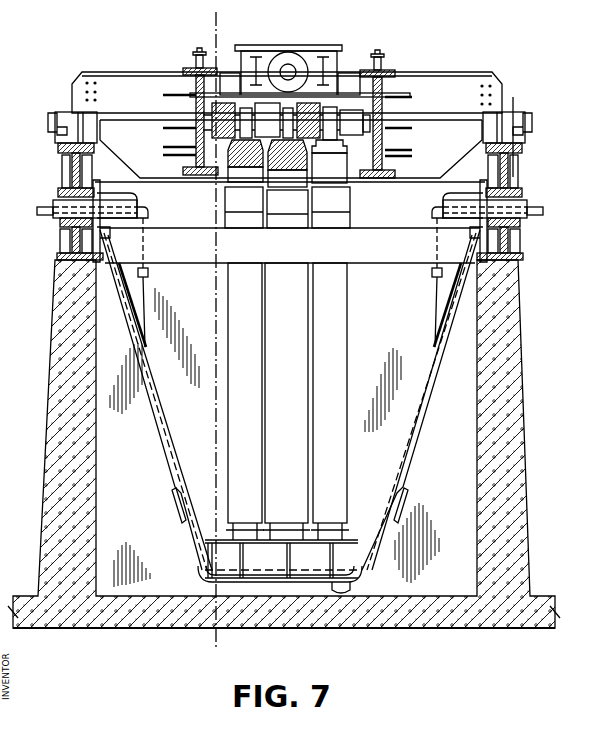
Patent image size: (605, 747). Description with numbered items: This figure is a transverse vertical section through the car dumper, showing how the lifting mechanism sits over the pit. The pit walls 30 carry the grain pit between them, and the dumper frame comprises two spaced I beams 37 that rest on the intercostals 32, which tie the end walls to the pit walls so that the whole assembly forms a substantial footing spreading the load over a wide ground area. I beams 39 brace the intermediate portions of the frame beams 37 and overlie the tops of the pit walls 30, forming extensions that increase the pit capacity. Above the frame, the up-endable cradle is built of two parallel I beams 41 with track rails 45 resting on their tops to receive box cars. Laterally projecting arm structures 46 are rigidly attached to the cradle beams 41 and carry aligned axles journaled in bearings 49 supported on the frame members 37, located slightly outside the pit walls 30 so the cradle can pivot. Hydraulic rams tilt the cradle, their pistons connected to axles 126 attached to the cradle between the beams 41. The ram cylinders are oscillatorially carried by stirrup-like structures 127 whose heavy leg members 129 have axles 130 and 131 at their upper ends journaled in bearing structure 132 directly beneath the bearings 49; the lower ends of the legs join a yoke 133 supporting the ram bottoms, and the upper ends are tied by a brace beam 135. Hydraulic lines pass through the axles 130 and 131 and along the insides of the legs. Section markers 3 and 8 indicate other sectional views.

The section line 3- 3 is at (216, 12).
The section line 8- 8 is at (511, 97).
The pit walls 30 is at (158, 544).
The intercostals 32 is at (55, 436).
The I beams 37 is at (66, 176).
The I beams 39 is at (156, 213).
The I beams 41 is at (188, 158).
The track rails 45 is at (200, 50).
The arm structures 46 is at (154, 131).
The bearings 49 is at (78, 118).
The axles 126 is at (222, 123).
The stirrup-like structures 127 is at (401, 479).
The leg member 129 is at (165, 450).
The axle 130 is at (518, 222).
The axle 131 is at (60, 215).
The bearing structure 132 is at (60, 230).
The yoke 133 is at (350, 590).
The brace beam 135 is at (365, 257).